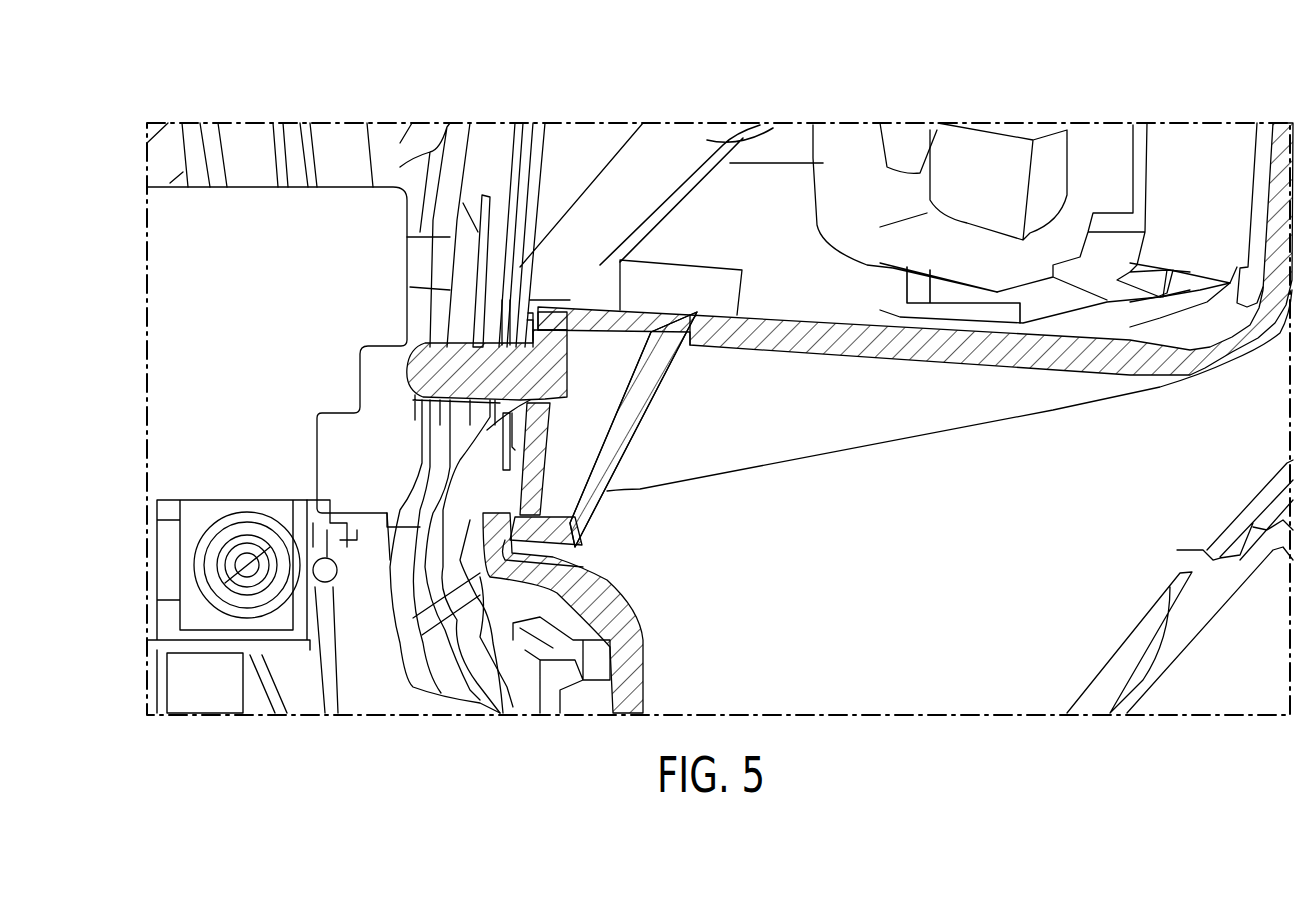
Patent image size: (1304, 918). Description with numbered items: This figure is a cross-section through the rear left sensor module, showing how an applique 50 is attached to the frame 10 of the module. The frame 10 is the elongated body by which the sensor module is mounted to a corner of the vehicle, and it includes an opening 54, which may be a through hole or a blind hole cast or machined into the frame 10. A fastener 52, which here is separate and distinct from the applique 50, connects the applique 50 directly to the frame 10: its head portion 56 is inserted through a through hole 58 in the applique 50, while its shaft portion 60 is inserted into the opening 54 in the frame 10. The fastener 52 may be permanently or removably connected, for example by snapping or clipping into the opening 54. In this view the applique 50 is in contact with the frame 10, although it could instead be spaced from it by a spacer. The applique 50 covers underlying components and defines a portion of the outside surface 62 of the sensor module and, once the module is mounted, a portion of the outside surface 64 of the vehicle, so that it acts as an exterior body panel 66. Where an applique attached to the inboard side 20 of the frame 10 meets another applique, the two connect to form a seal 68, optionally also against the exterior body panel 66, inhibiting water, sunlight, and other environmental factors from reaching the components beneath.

The inboard side 20 is at (480, 85).
The frame 10 is at (517, 272).
The shaft portion 60 is at (440, 348).
The fastener 52 is at (427, 421).
The opening 54 is at (487, 430).
The head portion 56 is at (548, 377).
The through hole 58 is at (545, 433).
The seal 68 is at (573, 545).
The applique 50 is at (752, 345).
The outside surface of the sensor module 62 is at (1045, 395).
The outside surface of the vehicle 64 is at (648, 605).
The exterior body panel 66 is at (633, 670).